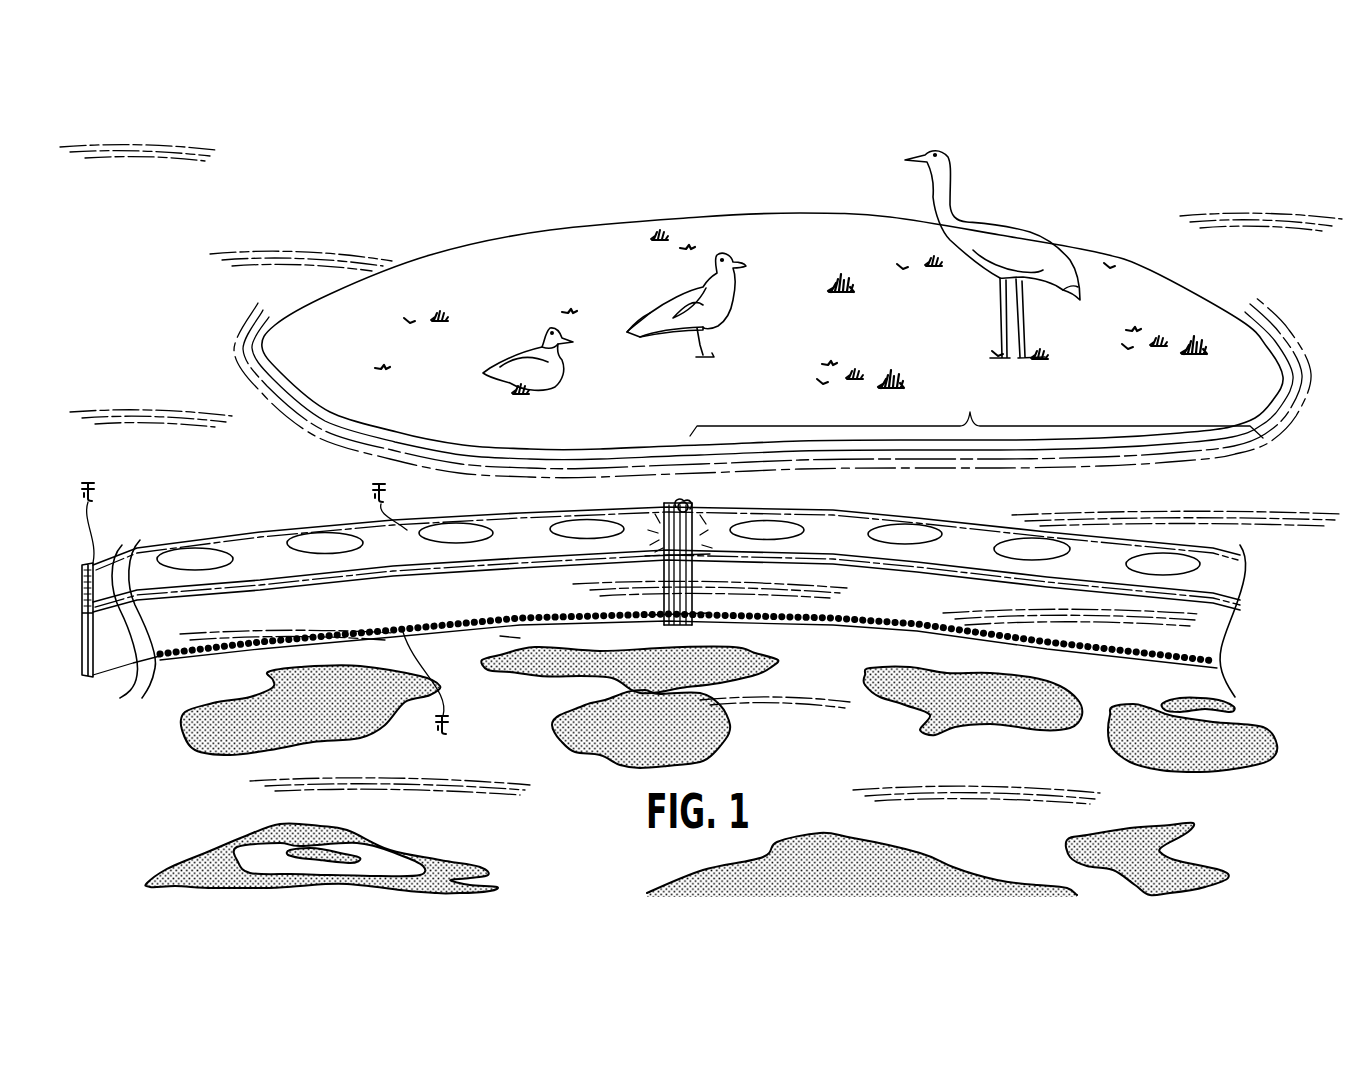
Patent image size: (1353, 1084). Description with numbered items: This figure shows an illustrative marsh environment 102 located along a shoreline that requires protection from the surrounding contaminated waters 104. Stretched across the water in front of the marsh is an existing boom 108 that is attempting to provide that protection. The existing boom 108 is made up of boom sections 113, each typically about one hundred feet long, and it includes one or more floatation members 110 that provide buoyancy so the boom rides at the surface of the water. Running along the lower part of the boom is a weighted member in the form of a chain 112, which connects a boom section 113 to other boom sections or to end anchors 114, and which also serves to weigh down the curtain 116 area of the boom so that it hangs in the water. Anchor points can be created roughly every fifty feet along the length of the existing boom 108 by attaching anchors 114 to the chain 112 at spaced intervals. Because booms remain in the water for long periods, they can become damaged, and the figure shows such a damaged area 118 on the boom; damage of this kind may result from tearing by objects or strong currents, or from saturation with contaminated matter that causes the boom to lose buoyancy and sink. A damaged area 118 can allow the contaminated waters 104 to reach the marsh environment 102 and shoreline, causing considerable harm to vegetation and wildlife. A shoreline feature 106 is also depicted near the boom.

The marsh environment 102 is at (1105, 130).
The contaminated waters 104 is at (1257, 818).
The sandbar / shoreline 106 is at (1238, 742).
The existing boom 108 is at (1147, 541).
The floatation member 110 is at (1187, 570).
The chain 112 is at (492, 622).
The boom section 113 is at (976, 410).
The anchor 114 is at (398, 489).
The curtain 116 is at (262, 620).
The damaged area 118 is at (700, 537).